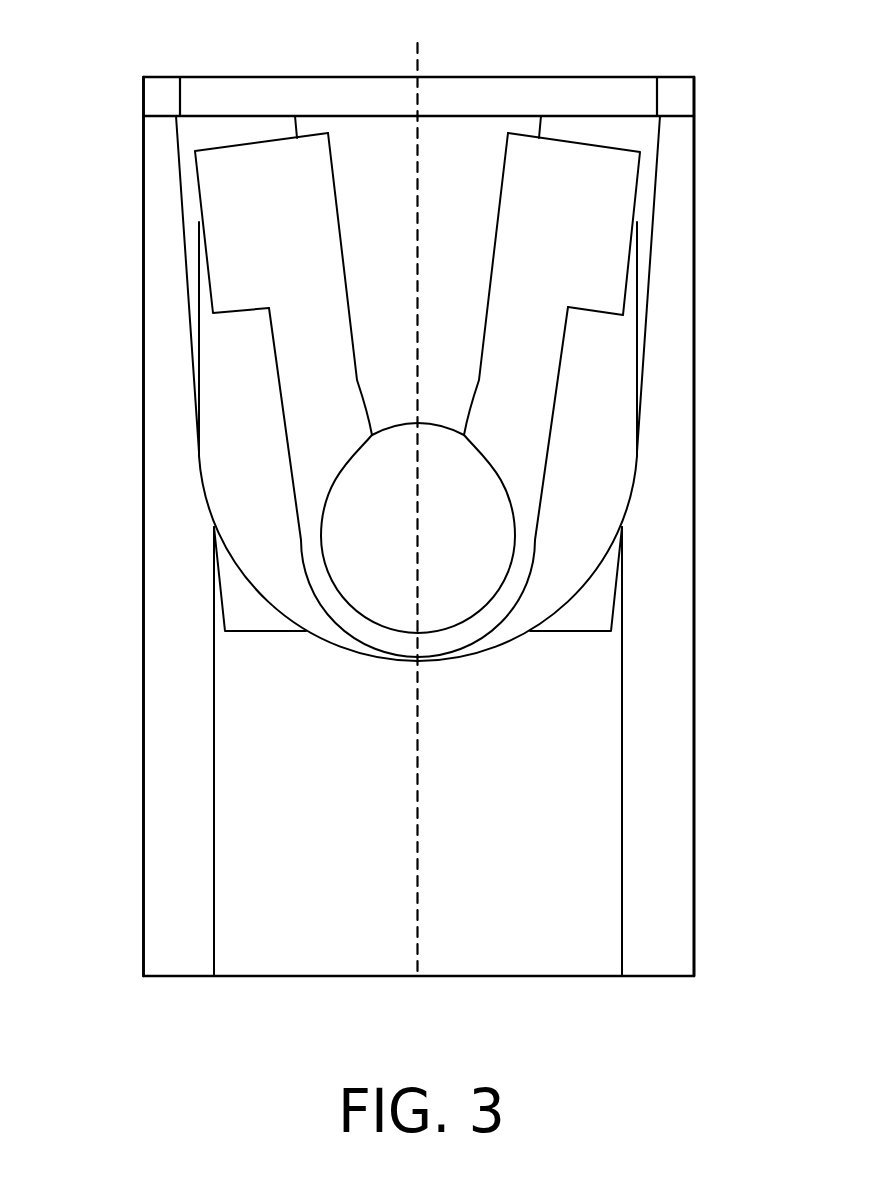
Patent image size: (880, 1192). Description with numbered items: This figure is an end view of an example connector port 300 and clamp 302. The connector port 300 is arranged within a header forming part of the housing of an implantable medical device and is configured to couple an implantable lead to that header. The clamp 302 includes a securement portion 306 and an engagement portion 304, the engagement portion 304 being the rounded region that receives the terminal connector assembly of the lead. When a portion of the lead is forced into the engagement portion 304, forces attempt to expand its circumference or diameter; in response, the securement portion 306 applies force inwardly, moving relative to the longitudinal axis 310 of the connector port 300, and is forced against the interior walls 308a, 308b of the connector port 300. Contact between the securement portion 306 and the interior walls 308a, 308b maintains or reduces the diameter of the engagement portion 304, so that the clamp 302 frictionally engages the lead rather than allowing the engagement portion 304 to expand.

The connector port 300 is at (256, 85).
The clamp 302 is at (307, 402).
The engagement portion 304 is at (343, 573).
The securement portion 306 is at (241, 228).
The interior wall 308a is at (143, 263).
The interior wall 308b is at (673, 202).
The longitudinal axis 310 is at (418, 64).